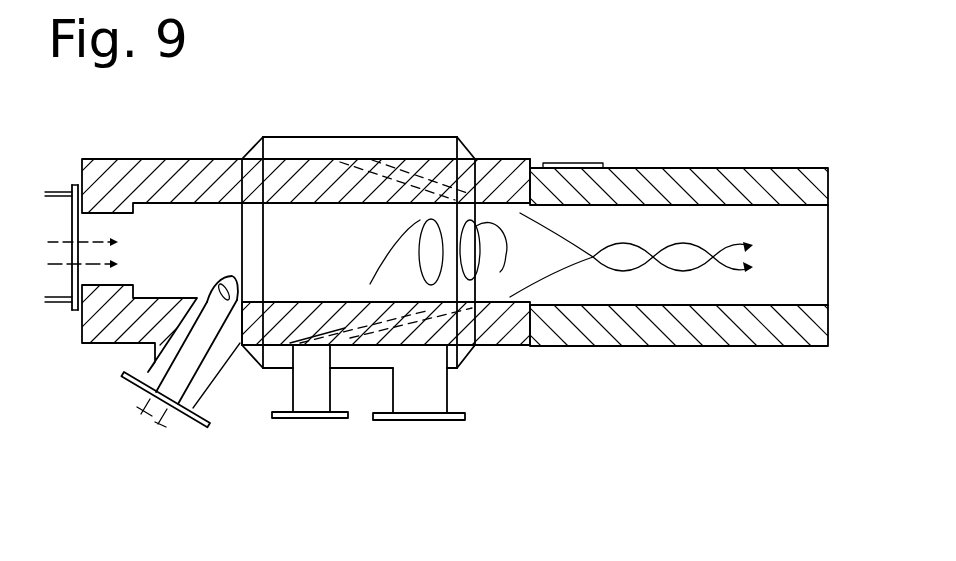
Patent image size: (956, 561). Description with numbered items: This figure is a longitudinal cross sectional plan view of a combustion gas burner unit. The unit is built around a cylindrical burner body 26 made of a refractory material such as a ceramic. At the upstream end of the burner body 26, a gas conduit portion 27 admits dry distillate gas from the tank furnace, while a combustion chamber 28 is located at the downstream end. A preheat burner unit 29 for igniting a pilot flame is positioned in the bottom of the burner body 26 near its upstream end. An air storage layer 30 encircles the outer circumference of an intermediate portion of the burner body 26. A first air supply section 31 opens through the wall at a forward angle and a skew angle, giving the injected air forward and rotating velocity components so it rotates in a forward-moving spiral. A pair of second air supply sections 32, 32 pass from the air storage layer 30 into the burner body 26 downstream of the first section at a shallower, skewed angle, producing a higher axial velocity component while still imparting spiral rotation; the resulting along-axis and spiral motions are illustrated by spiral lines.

The burner body 26 is at (504, 104).
The gas conduit portion 27 is at (45, 218).
The combustion chamber 28 is at (704, 177).
The preheat burner unit 29 is at (190, 349).
The air storage layer 30 is at (327, 147).
The first air supply section 31 is at (343, 327).
The second air supply section 32 is at (402, 177).